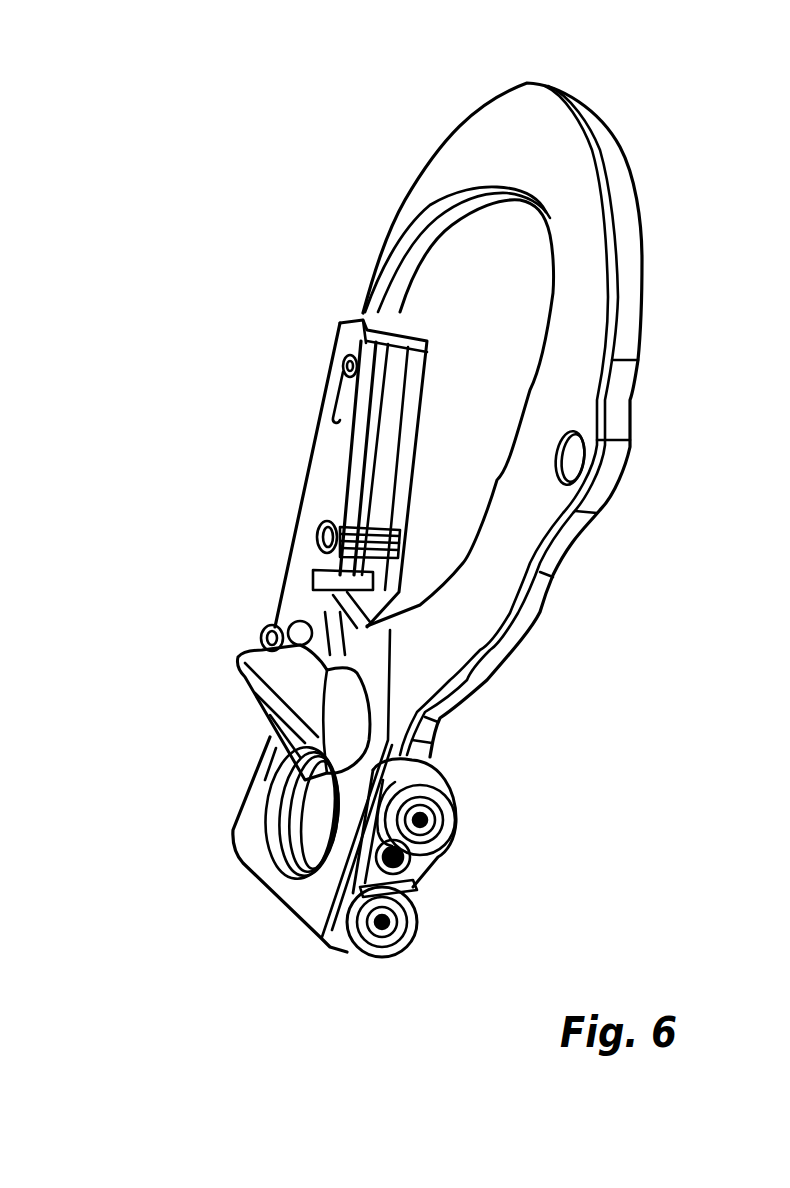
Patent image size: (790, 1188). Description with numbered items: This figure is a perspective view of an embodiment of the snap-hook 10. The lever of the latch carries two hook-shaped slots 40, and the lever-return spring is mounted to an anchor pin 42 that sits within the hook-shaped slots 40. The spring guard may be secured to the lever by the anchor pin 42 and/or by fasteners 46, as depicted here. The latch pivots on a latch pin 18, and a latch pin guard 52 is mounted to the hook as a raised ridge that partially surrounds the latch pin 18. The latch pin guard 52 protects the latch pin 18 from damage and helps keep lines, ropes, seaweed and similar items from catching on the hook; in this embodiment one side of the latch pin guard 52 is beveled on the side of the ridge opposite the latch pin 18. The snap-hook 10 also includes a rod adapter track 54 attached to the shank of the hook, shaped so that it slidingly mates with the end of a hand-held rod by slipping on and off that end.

The snap-hook 10 is at (104, 89).
The hook-shaped slot 40 is at (349, 318).
The anchor pin 42 is at (350, 376).
The fastener 46 is at (318, 532).
The latch pin 18 is at (262, 630).
The latch pin guard 52 is at (245, 700).
The rod adapter track 54 is at (457, 803).